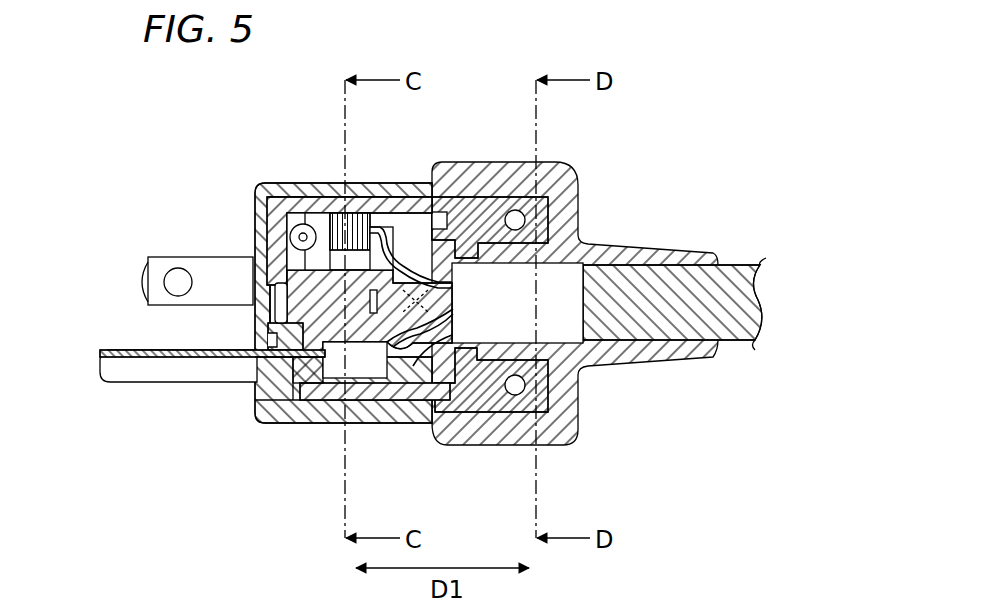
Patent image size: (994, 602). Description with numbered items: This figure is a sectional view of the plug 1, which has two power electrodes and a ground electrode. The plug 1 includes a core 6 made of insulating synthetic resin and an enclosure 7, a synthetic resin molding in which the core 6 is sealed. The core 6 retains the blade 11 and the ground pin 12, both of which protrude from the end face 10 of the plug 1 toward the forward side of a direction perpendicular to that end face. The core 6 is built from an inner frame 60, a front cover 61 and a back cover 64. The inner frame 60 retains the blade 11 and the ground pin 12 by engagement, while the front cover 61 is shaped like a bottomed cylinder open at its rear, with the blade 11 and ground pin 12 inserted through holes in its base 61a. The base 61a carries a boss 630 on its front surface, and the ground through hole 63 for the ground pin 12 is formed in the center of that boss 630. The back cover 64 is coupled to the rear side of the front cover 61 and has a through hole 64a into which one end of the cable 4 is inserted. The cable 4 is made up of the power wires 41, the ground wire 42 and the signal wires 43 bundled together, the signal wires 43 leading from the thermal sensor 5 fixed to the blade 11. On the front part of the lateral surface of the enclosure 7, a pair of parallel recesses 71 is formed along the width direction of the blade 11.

The plug 1 is at (580, 176).
The cable 4 is at (743, 263).
The thermal sensor 5 is at (257, 202).
The core 6 is at (268, 388).
The enclosure 7 is at (477, 450).
The end face 10 is at (254, 238).
The blade 11 is at (156, 273).
The ground pin 12 is at (128, 370).
The power wire 41 is at (421, 306).
The ground wire 42 is at (413, 347).
The signal wire 43 is at (405, 207).
The inner frame 60 is at (323, 217).
The front cover 61 is at (317, 393).
The base 61a is at (287, 390).
The ground through hole 63 is at (270, 343).
The back cover 64 is at (542, 390).
The through hole 64a is at (500, 243).
The recess 71 is at (377, 183).
The boss 630 is at (260, 370).